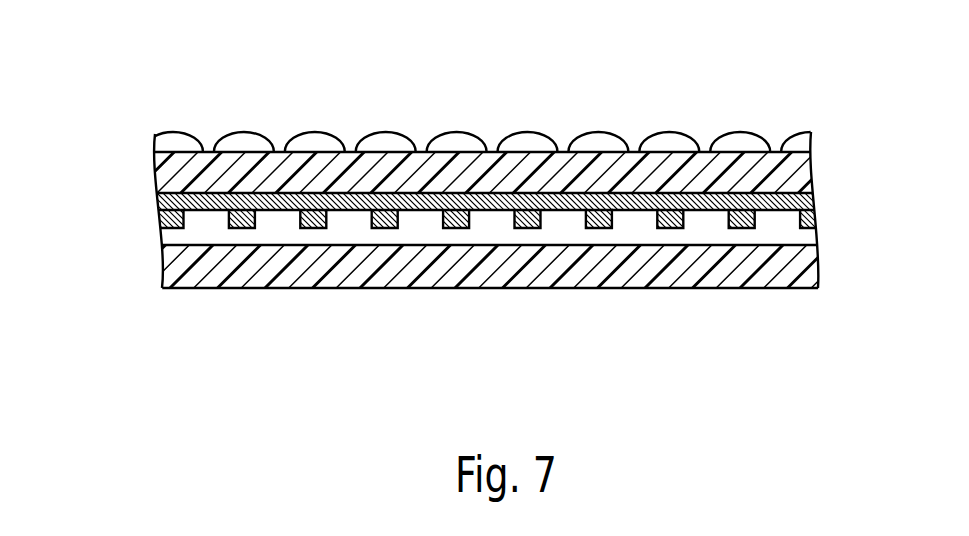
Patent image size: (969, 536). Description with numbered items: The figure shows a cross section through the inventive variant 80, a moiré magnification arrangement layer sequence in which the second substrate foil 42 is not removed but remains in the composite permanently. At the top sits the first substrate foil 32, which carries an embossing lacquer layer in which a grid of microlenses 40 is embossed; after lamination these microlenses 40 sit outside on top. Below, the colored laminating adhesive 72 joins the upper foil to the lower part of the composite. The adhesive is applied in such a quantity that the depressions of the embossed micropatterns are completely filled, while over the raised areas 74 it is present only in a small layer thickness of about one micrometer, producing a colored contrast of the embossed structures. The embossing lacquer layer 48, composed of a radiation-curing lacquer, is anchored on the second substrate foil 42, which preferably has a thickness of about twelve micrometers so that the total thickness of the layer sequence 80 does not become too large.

The inventive variant 80 is at (125, 92).
The microlenses 40 is at (526, 141).
The first substrate foil 32 is at (795, 171).
The colored laminating adhesive 72 is at (496, 266).
The embossing lacquer layer 48 is at (807, 237).
The second substrate foil 42 is at (794, 273).
The raised areas 74 is at (563, 212).